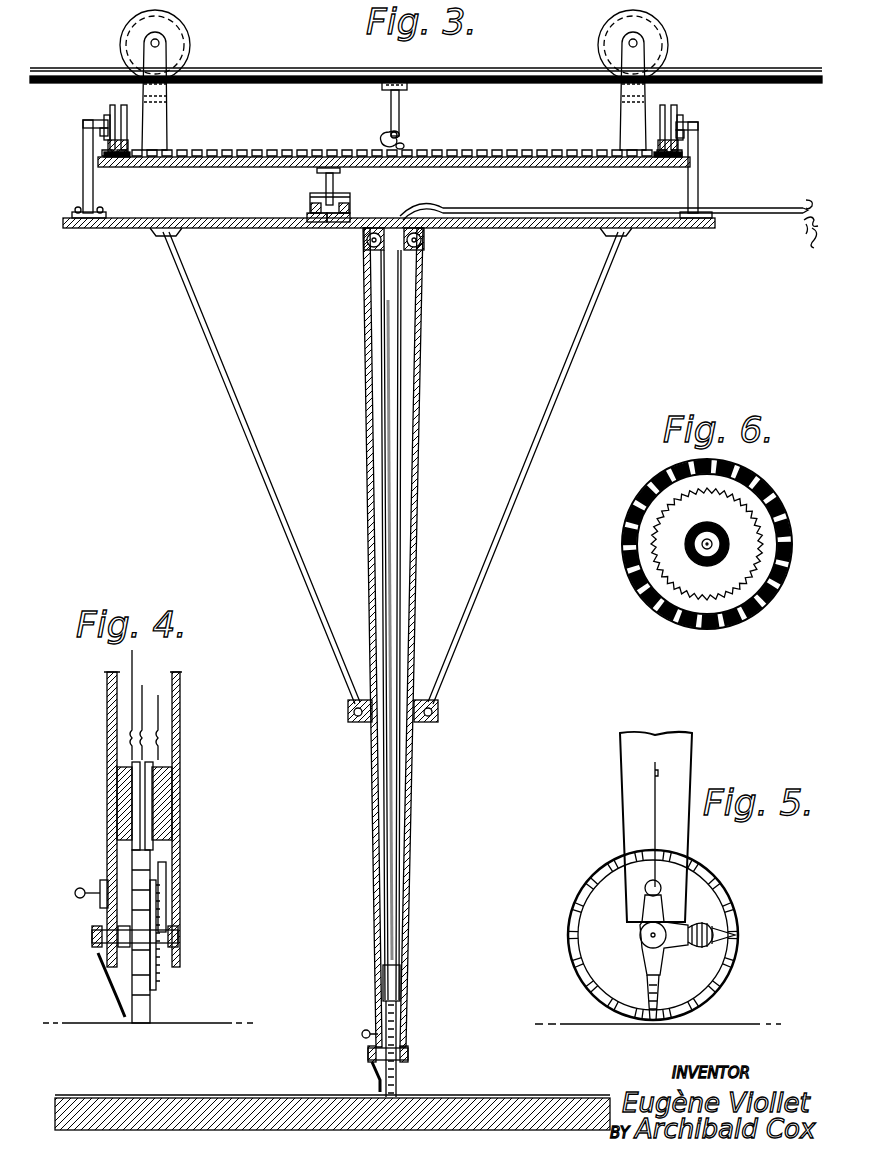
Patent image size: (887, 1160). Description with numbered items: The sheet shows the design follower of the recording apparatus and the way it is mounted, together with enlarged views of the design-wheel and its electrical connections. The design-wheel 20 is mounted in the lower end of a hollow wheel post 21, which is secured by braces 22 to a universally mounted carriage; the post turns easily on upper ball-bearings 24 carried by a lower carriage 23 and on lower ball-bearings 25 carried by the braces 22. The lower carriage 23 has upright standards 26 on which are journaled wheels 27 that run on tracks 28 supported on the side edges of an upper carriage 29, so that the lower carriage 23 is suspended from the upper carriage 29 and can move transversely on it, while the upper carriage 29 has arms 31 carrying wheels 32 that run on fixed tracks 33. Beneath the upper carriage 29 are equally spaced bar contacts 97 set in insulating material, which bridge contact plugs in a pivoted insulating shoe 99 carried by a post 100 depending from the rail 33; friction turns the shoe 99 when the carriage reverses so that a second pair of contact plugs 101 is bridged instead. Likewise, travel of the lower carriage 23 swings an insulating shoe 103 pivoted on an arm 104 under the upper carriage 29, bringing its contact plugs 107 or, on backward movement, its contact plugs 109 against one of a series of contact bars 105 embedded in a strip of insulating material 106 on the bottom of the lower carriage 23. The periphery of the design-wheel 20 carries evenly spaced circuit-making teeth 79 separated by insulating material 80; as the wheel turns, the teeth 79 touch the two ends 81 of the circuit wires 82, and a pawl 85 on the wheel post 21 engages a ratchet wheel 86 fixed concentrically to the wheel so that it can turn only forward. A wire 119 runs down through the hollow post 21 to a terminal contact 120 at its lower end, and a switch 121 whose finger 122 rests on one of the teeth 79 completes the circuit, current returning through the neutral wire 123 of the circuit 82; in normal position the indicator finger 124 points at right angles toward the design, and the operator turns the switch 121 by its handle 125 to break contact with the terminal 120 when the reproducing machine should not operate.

In FIG. 5, the design-wheel 20 is at (600, 918).
In FIG. 3, the wheel post 21 is at (420, 495).
In FIG. 4, the wheel post 21 is at (176, 674).
In FIG. 5, the wheel post 21 is at (680, 752).
In FIG. 3, the braces 22 is at (290, 566).
In FIG. 3, the lower carriage 23 is at (528, 230).
In FIG. 3, the upper ball-bearings 24 is at (423, 238).
In FIG. 3, the lower ball-bearings 25 is at (430, 724).
In FIG. 3, the upright standards 26 is at (94, 200).
In FIG. 3, the wheels 27 is at (110, 108).
In FIG. 3, the tracks 28 is at (108, 148).
In FIG. 3, the upper carriage 29 is at (584, 170).
In FIG. 3, the arms 31 is at (162, 121).
In FIG. 3, the wheels 32 is at (178, 52).
In FIG. 3, the fixed tracks 33 is at (540, 84).
In FIG. 4, the circuit-making teeth 79 is at (150, 992).
In FIG. 5, the circuit-making teeth 79 is at (582, 904).
In FIG. 6, the circuit-making teeth 79 is at (708, 630).
In FIG. 6, the insulating material 80 is at (630, 540).
In FIG. 4, the wire ends 81 is at (160, 818).
In FIG. 3, the circuit wires 82 is at (806, 228).
In FIG. 4, the circuit wires 82 is at (166, 715).
In FIG. 4, the pawl 85 is at (164, 868).
In FIG. 6, the ratchet wheel 86 is at (668, 582).
In FIG. 3, the bar contacts 97 is at (229, 153).
In FIG. 3, the pivoted shoe 99 is at (400, 137).
In FIG. 3, the post 100 is at (392, 100).
In FIG. 3, the contact plugs 101 is at (382, 137).
In FIG. 3, the shoe 103 is at (350, 197).
In FIG. 3, the arm 104 is at (326, 180).
In FIG. 3, the contact bars 105 is at (288, 230).
In FIG. 3, the strip of insulating material 106 is at (336, 230).
In FIG. 3, the contact plugs 107 is at (310, 207).
In FIG. 3, the contact plugs 109 is at (310, 199).
In FIG. 3, the wire 119 is at (806, 206).
In FIG. 4, the wire 119 is at (139, 668).
In FIG. 5, the wire 119 is at (644, 820).
In FIG. 4, the terminal contact 120 is at (104, 878).
In FIG. 3, the switch 121 is at (370, 1062).
In FIG. 4, the switch 121 is at (94, 940).
In FIG. 5, the switch 121 is at (640, 928).
In FIG. 5, the finger 122 is at (728, 934).
In FIG. 3, the neutral wire 123 is at (801, 253).
In FIG. 4, the neutral wire 123 is at (150, 695).
In FIG. 5, the indicator finger 124 is at (648, 990).
In FIG. 3, the handle 125 is at (362, 1036).
In FIG. 4, the handle 125 is at (80, 894).
In FIG. 5, the handle 125 is at (660, 885).